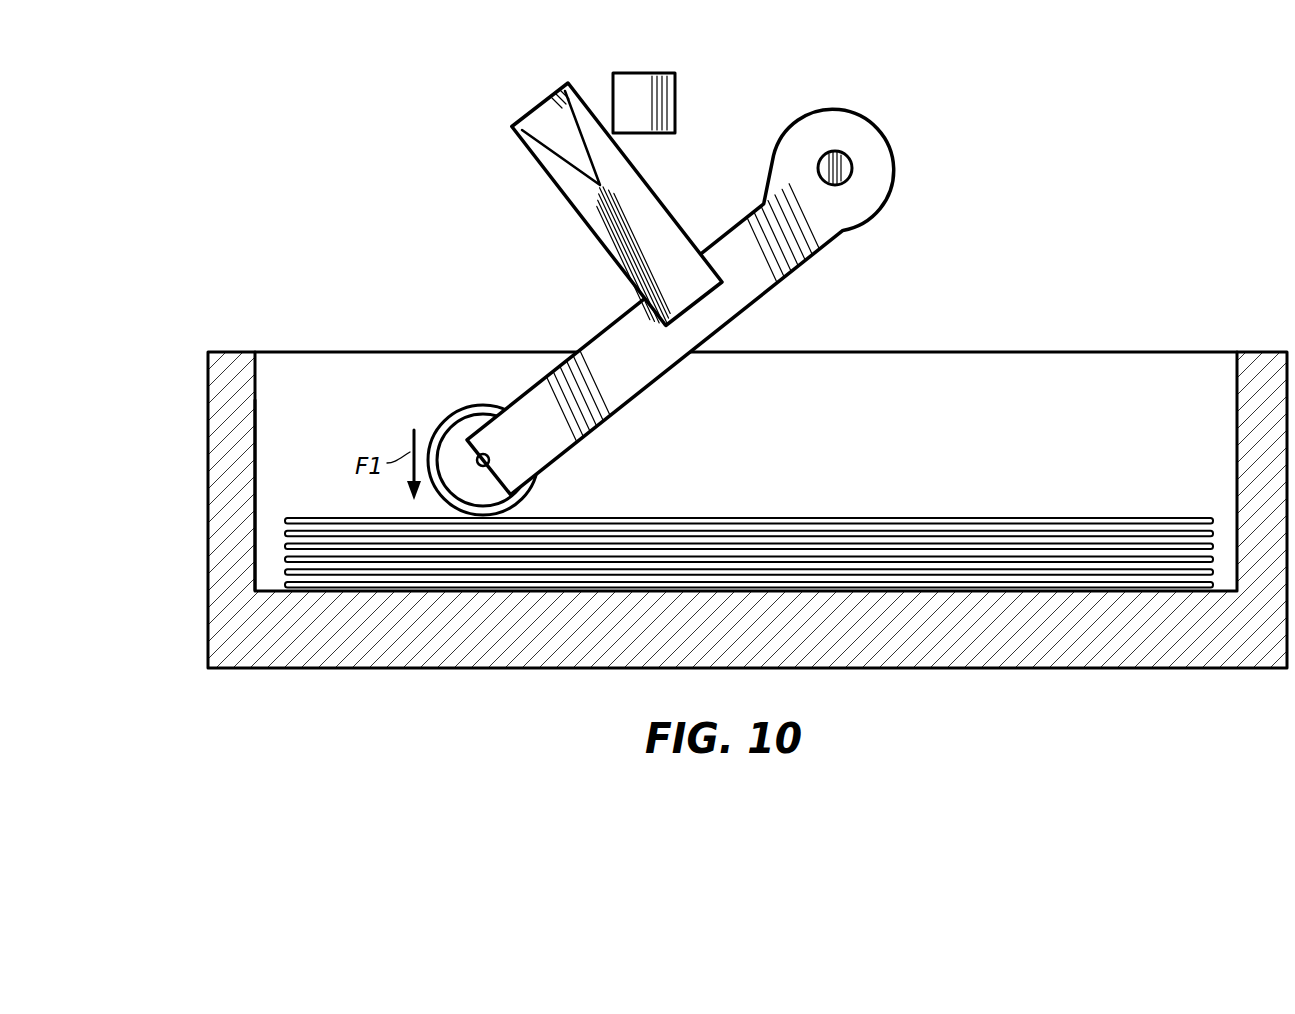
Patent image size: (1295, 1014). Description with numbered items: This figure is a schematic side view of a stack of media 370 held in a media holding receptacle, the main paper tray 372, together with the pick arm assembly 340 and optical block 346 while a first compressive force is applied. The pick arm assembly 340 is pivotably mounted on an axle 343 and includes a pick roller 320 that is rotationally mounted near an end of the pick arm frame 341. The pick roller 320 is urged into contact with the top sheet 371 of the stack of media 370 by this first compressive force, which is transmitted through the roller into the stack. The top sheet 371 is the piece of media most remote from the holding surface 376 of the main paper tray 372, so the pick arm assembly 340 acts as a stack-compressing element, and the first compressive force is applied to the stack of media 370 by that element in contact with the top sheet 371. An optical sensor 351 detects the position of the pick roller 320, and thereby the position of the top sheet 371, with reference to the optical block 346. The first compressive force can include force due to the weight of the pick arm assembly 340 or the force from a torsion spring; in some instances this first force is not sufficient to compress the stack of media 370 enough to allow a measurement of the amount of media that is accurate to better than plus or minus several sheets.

The pick roller 320 is at (477, 404).
The pick arm assembly 340 is at (739, 284).
The pick arm frame 341 is at (862, 226).
The axle 343 is at (839, 150).
The optical block 346 is at (560, 192).
The optical sensor 351 is at (640, 73).
The stack of media 370 is at (749, 520).
The top sheet 371 is at (790, 517).
The main paper tray 372 is at (208, 416).
The holding surface 376 is at (268, 587).